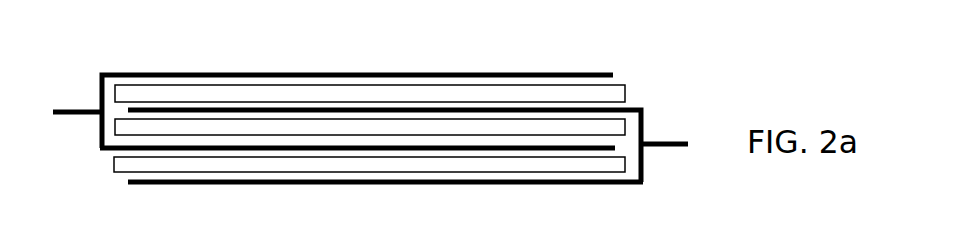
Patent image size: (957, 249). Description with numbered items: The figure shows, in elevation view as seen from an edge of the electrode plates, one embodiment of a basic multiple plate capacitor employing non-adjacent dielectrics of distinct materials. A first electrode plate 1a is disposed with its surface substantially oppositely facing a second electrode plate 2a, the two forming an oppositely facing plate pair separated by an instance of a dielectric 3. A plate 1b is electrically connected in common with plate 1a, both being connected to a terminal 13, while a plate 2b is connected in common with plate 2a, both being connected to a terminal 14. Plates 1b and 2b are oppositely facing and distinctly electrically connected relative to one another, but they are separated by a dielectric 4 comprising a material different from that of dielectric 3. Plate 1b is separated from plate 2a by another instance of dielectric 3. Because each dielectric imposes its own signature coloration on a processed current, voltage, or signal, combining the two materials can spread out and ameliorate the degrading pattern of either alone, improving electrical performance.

The first electrode plate 1a is at (517, 72).
The plate 1b is at (478, 148).
The second electrode plate 2a is at (550, 108).
The plate 2b is at (567, 181).
The dielectric 3 is at (180, 127).
The dielectric 4 is at (122, 168).
The terminal 13 is at (75, 112).
The terminal 14 is at (668, 142).